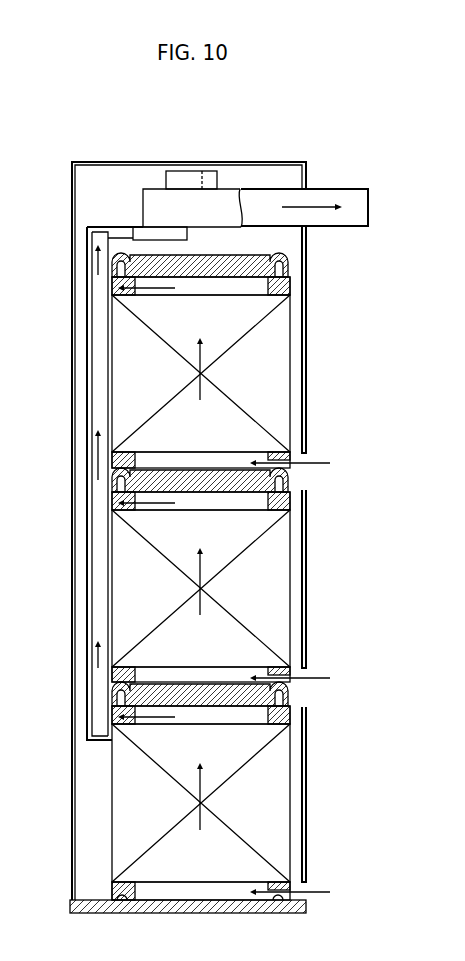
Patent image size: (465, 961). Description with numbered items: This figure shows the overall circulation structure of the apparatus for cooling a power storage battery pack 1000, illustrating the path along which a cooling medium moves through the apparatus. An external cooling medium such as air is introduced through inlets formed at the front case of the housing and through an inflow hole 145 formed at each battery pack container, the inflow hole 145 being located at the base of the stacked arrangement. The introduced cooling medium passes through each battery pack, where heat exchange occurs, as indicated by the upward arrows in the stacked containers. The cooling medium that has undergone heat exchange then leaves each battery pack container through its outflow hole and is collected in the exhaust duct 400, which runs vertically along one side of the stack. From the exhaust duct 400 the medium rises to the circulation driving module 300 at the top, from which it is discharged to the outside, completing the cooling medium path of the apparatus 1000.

The apparatus for cooling a power storage battery pack 1000 is at (295, 137).
The circulation driving module 300 is at (181, 178).
The exhaust duct 400 is at (82, 429).
The inflow hole 145 is at (298, 906).